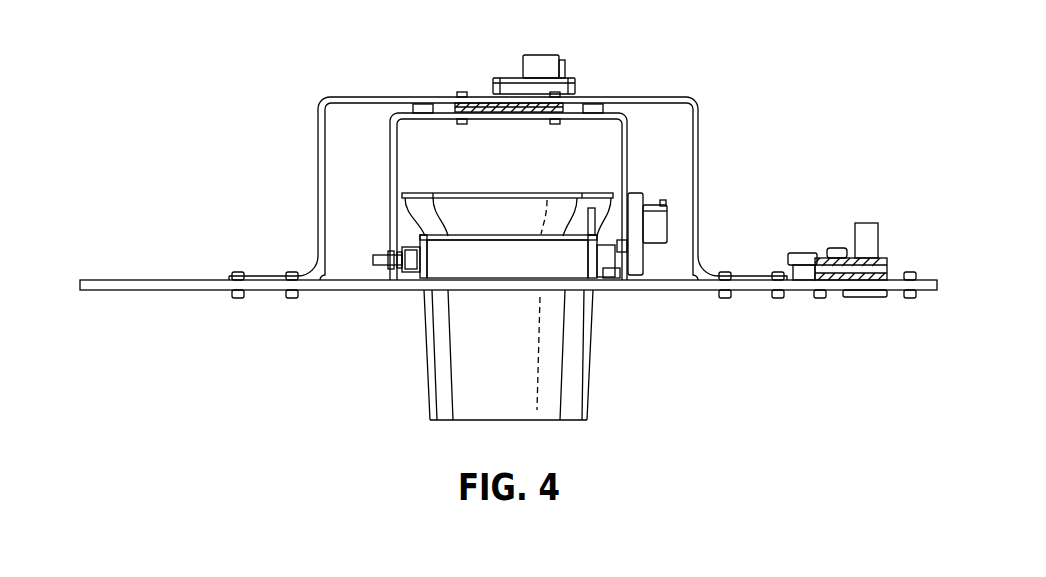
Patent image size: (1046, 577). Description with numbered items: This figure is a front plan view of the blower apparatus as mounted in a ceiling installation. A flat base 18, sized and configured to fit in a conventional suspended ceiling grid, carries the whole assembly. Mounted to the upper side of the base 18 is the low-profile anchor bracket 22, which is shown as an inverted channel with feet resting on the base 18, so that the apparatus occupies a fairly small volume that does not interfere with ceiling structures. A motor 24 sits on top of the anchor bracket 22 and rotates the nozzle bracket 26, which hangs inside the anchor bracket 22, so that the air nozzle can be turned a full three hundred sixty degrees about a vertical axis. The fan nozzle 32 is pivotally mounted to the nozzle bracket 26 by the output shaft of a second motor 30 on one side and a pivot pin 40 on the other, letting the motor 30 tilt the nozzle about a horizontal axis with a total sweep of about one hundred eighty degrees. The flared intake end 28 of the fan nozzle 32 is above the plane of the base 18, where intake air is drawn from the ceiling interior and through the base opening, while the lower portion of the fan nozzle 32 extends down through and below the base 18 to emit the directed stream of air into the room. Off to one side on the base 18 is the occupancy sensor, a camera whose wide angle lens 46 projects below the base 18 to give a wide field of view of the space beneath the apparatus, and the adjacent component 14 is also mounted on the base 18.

The sensor assembly 14 is at (824, 230).
The base 18 is at (120, 279).
The anchor bracket 22 is at (378, 97).
The motor 24 is at (540, 56).
The nozzle bracket 26 is at (390, 183).
The flared intake end 28 is at (508, 182).
The motor 30 is at (665, 203).
The fan nozzle 32 is at (590, 345).
The pivot pin 40 is at (385, 266).
The wide angle lens 46 is at (865, 297).